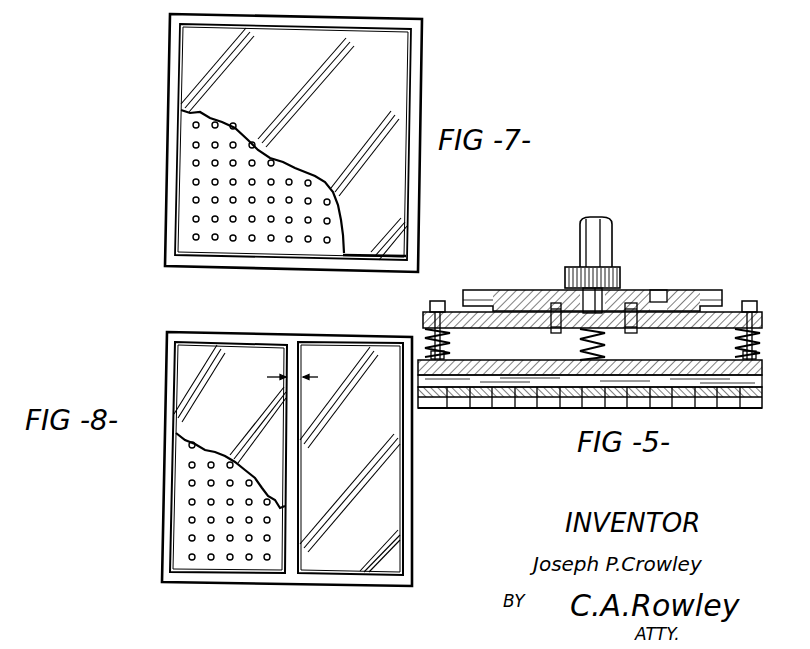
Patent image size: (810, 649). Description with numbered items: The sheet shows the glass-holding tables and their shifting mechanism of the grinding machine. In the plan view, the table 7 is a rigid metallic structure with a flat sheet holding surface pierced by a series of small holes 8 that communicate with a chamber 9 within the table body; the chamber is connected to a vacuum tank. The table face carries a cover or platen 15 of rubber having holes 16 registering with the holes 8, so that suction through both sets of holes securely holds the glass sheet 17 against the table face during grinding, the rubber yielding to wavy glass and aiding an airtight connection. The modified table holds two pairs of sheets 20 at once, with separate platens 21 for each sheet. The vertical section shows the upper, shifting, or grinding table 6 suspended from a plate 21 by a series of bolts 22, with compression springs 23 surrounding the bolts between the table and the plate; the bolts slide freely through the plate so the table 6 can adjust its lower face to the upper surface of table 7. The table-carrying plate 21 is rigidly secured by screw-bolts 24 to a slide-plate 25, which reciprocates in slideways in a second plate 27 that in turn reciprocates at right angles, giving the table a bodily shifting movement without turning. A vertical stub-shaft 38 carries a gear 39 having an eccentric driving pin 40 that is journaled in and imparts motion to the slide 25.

In FIG. 5, the upper grinding table 6 is at (483, 368).
In FIG. 7, the lower sheet holding table 7 is at (176, 158).
In FIG. 8, the lower sheet holding table 7 is at (176, 360).
In FIG. 5, the holes 8 is at (650, 393).
In FIG. 5, the chamber 9 is at (687, 385).
In FIG. 7, the platen 15 is at (192, 210).
In FIG. 5, the platen 15 is at (509, 404).
In FIG. 7, the holes 16 is at (193, 143).
In FIG. 8, the holes 16 is at (187, 519).
In FIG. 7, the glass sheet 17 is at (381, 70).
In FIG. 8, the sheets 20 is at (230, 375).
In FIG. 8, the platen 21 is at (185, 468).
In FIG. 5, the platen 21 is at (718, 316).
In FIG. 5, the bolts 22 is at (437, 301).
In FIG. 5, the compression springs 23 is at (448, 330).
In FIG. 5, the screw-bolts 24 is at (632, 333).
In FIG. 5, the slide-plate 25 is at (630, 304).
In FIG. 5, the second plate 27 is at (663, 300).
In FIG. 5, the stub-shaft 38 is at (603, 250).
In FIG. 5, the gear 39 is at (573, 278).
In FIG. 5, the eccentric driving pin 40 is at (586, 306).